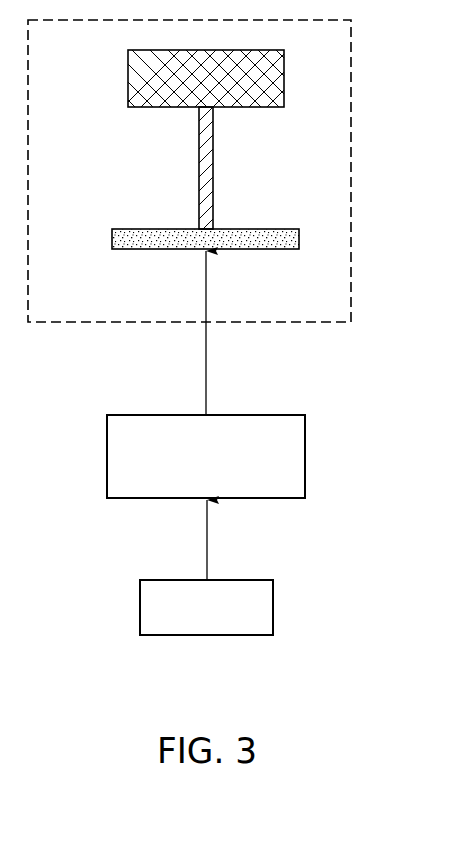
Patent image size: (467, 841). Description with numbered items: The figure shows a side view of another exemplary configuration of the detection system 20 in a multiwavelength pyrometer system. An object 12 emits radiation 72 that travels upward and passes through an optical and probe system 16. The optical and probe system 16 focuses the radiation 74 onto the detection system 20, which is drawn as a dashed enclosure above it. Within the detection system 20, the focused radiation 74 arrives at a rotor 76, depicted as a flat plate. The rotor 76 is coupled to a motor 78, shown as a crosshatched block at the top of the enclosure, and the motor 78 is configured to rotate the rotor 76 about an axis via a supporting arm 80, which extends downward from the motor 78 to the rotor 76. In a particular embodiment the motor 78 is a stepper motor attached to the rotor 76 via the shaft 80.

The object 12 is at (274, 598).
The optical and probe system 16 is at (306, 455).
The detection system 20 is at (352, 153).
The radiation 72 is at (208, 548).
The radiation 74 is at (207, 365).
The rotor 76 is at (240, 229).
The motor 78 is at (128, 84).
The supporting arm 80 is at (198, 161).